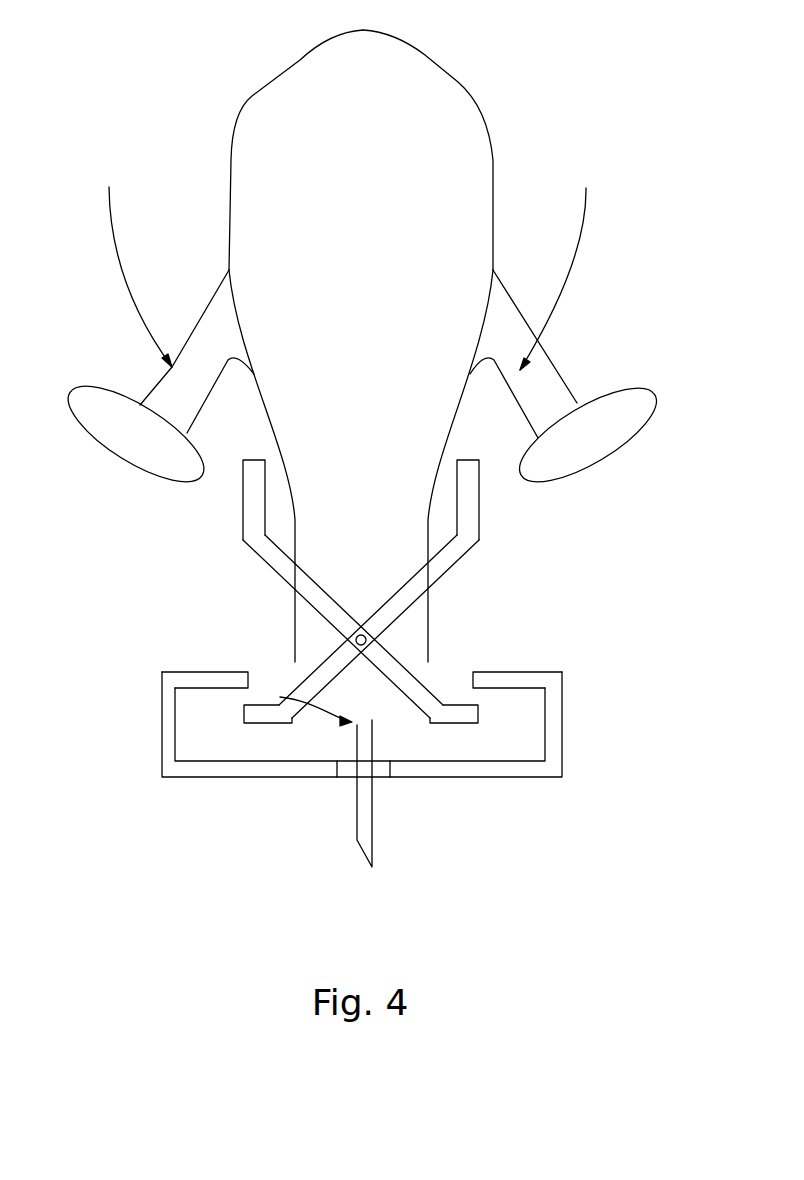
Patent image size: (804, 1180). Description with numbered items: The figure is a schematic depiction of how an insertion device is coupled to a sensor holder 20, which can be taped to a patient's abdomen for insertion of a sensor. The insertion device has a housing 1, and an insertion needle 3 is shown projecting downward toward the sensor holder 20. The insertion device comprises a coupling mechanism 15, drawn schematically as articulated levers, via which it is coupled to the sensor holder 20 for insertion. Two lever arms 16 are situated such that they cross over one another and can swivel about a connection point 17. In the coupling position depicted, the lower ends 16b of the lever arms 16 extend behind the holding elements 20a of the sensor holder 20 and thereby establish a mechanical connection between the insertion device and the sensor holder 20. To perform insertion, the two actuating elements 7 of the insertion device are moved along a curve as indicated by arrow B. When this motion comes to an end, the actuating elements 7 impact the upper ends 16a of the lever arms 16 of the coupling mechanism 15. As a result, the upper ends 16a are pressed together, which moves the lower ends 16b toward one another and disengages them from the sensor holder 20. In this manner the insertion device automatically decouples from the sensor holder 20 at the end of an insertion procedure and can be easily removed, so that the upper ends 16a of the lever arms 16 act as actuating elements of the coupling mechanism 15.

The housing 1 is at (472, 138).
The actuating elements 7 is at (93, 423).
The arrow B is at (118, 258).
The coupling mechanism 15 is at (374, 590).
The lever arms 16 is at (452, 568).
The upper ends of lever arms 16a is at (243, 492).
The lower ends of lever arms 16b is at (243, 712).
The connection point 17 is at (377, 642).
The sensor holder 20 is at (383, 728).
The holding elements 20a is at (207, 671).
The insertion needle 3 is at (355, 808).